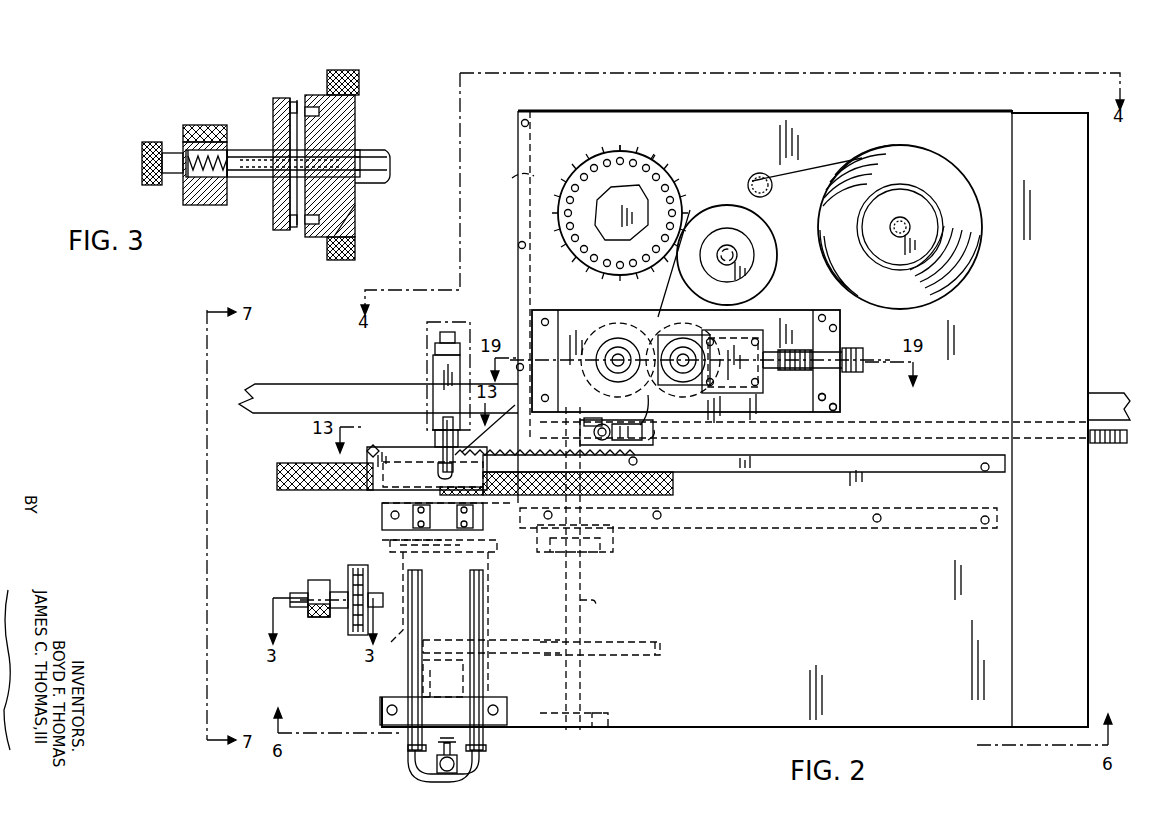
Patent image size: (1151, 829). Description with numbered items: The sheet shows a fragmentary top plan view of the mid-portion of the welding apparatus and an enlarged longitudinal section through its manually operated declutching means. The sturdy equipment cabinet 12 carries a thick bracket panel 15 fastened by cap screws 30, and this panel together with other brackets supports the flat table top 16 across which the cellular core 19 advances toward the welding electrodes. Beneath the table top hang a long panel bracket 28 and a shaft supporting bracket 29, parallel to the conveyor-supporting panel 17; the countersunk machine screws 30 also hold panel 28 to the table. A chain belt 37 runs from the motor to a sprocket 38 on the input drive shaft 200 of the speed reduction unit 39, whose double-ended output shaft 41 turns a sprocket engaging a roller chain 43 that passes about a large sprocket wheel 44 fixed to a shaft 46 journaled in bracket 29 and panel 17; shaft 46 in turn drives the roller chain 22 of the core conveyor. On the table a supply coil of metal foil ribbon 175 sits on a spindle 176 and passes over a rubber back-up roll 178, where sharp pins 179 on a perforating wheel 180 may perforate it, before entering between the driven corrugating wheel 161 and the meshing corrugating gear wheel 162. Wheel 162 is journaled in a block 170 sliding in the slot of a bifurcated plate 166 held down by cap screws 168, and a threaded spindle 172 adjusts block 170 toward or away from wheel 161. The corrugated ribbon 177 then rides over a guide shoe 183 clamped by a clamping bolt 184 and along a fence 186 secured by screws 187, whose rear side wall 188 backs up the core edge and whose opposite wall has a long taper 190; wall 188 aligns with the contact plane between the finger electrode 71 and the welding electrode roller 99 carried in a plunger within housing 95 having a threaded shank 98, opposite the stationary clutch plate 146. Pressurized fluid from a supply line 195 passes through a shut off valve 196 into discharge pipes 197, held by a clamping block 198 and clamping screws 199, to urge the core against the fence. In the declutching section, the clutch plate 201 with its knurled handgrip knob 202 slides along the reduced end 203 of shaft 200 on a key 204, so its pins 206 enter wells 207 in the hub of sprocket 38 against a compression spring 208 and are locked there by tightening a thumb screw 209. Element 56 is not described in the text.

In FIG. 2, the equipment cabinet 12 is at (876, 111).
In FIG. 2, the bracket panel 15 is at (516, 178).
In FIG. 2, the table top 16 is at (736, 125).
In FIG. 2, the conveyor-supporting panel 17 is at (278, 406).
In FIG. 2, the cellular core 19 is at (328, 492).
In FIG. 2, the roller chain 22 is at (1116, 444).
In FIG. 2, the panel bracket 28 is at (838, 542).
In FIG. 2, the shaft supporting bracket 29 is at (598, 726).
In FIG. 2, the machine screws 30 is at (522, 123).
In FIG. 3, the chain belt 37 is at (350, 80).
In FIG. 2, the chain belt 37 is at (352, 636).
In FIG. 3, the sprocket 38 is at (355, 122).
In FIG. 2, the sprocket 38 is at (360, 636).
In FIG. 2, the speed reduction unit 39 is at (486, 598).
In FIG. 2, the output shaft 41 is at (443, 711).
In FIG. 2, the roller chain 43 is at (516, 642).
In FIG. 2, the sprocket wheel 44 is at (660, 650).
In FIG. 2, the shaft 46 is at (590, 606).
In FIG. 2, the printing head 56 is at (422, 370).
In FIG. 2, the finger electrode 71 is at (438, 474).
In FIG. 2, the housing 95 is at (433, 379).
In FIG. 2, the threaded shank 98 is at (440, 330).
In FIG. 2, the welding electrode roller 99 is at (442, 442).
In FIG. 2, the stationary clutch plate 146 is at (372, 492).
In FIG. 2, the driven corrugating wheel 161 is at (608, 318).
In FIG. 2, the corrugating gear wheel 162 is at (652, 338).
In FIG. 2, the bifurcated plate 166 is at (780, 332).
In FIG. 2, the cap screws 168 is at (838, 407).
In FIG. 2, the block 170 is at (738, 338).
In FIG. 2, the threaded spindle 172 is at (860, 358).
In FIG. 2, the metal foil ribbon 175 is at (980, 262).
In FIG. 2, the spindle 176 is at (900, 222).
In FIG. 2, the corrugated ribbon 177 is at (646, 415).
In FIG. 2, the back-up roll 178 is at (800, 232).
In FIG. 2, the sharp pins 179 is at (672, 190).
In FIG. 2, the perforating wheel 180 is at (574, 174).
In FIG. 2, the guide shoe 183 is at (598, 422).
In FIG. 2, the clamping bolt 184 is at (590, 416).
In FIG. 2, the fence 186 is at (778, 478).
In FIG. 2, the screws 187 is at (986, 472).
In FIG. 2, the rear side wall 188 is at (842, 489).
In FIG. 2, the long taper 190 is at (588, 486).
In FIG. 2, the supply line 195 is at (448, 772).
In FIG. 2, the shut off valve 196 is at (408, 741).
In FIG. 2, the discharge pipes 197 is at (474, 592).
In FIG. 2, the clamping block 198 is at (384, 712).
In FIG. 2, the clamping screws 199 is at (491, 716).
In FIG. 3, the input drive shaft 200 is at (366, 156).
In FIG. 3, the clutch plate 201 is at (272, 130).
In FIG. 2, the clutch plate 201 is at (328, 580).
In FIG. 3, the knurled handgrip knob 202 is at (200, 125).
In FIG. 3, the reduced end 203 is at (348, 198).
In FIG. 3, the key 204 is at (260, 193).
In FIG. 3, the pins 206 is at (295, 96).
In FIG. 3, the wells 207 is at (318, 96).
In FIG. 3, the compression spring 208 is at (200, 205).
In FIG. 3, the thumb screw 209 is at (150, 142).
In FIG. 2, the thumb screw 209 is at (304, 594).